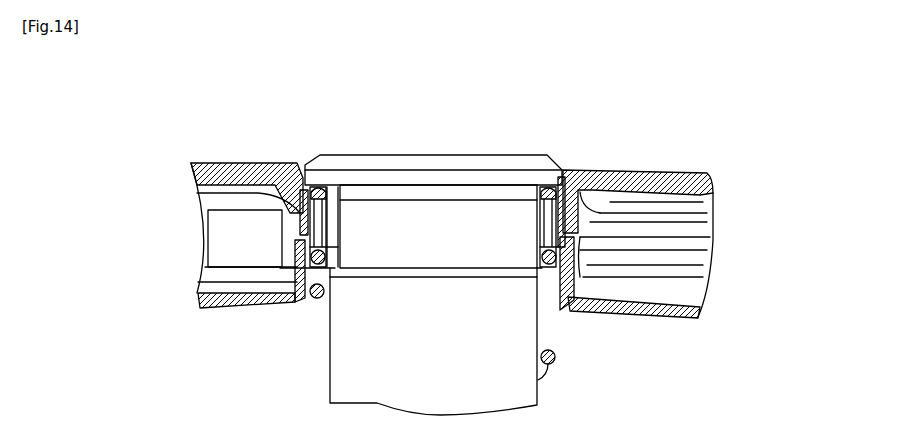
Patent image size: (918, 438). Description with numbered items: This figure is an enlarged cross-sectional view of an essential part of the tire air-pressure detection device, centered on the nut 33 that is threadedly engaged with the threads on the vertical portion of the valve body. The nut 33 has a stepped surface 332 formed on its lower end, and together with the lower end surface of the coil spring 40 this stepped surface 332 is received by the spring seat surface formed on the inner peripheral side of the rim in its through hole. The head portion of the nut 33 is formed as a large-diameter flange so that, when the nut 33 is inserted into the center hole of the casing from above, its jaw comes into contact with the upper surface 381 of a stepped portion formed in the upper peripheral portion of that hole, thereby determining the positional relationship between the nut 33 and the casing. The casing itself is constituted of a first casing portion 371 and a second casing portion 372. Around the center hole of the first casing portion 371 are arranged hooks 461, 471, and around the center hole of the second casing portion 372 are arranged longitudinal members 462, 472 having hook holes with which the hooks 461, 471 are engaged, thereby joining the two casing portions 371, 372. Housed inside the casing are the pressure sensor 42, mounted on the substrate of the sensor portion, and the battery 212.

The first casing portion 371 is at (237, 162).
The second casing portion 372 is at (218, 308).
The pressure sensor 42 is at (228, 241).
The hook 461 is at (198, 195).
The longitudinal member 462 is at (357, 212).
The coil spring 40 is at (313, 298).
The stepped surface 332 is at (433, 190).
The nut 33 is at (345, 387).
The longitudinal member 472 is at (541, 221).
The upper surface of stepped portion 381 is at (570, 170).
The hook 471 is at (703, 201).
The battery 212 is at (692, 247).